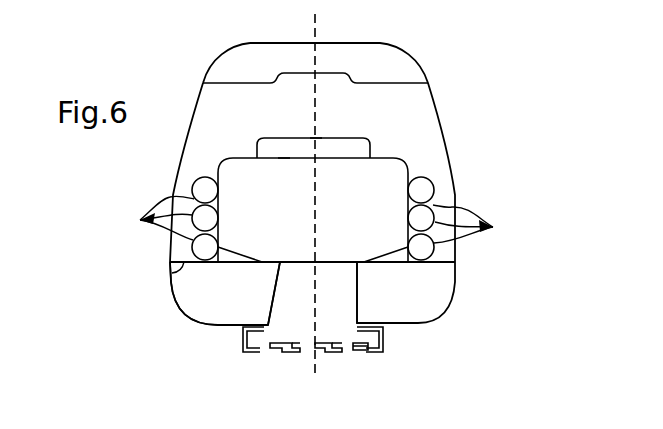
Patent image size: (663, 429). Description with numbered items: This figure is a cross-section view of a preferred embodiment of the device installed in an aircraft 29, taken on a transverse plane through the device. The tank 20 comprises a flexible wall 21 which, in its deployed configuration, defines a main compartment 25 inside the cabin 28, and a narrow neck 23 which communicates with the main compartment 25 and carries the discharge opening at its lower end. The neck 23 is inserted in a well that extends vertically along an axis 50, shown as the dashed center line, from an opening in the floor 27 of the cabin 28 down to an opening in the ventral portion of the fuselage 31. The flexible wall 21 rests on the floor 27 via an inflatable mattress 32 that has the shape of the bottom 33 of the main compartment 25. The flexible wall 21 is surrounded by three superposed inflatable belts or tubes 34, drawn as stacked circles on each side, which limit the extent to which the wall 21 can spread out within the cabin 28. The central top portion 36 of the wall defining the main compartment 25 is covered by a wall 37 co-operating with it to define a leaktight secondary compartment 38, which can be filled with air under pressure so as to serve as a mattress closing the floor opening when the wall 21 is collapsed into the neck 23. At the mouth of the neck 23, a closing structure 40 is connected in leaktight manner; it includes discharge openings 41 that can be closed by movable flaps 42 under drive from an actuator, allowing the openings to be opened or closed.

The tank 20 is at (394, 157).
The flexible wall 21 is at (231, 169).
The neck 23 is at (348, 304).
The main compartment 25 is at (373, 249).
The floor 27 is at (176, 268).
The cabin 28 is at (290, 124).
The aircraft 29 is at (418, 57).
The fuselage 31 is at (396, 327).
The inflatable mattress 32 is at (224, 263).
The bottom 33 is at (245, 246).
The inflatable belts 34 is at (318, 220).
The central top portion 36 is at (283, 160).
The wall 37 is at (318, 138).
The secondary compartment 38 is at (355, 143).
The closing structure 40 is at (240, 340).
The discharge openings 41 is at (272, 352).
The movable flaps 42 is at (312, 342).
The axis 50 is at (317, 18).